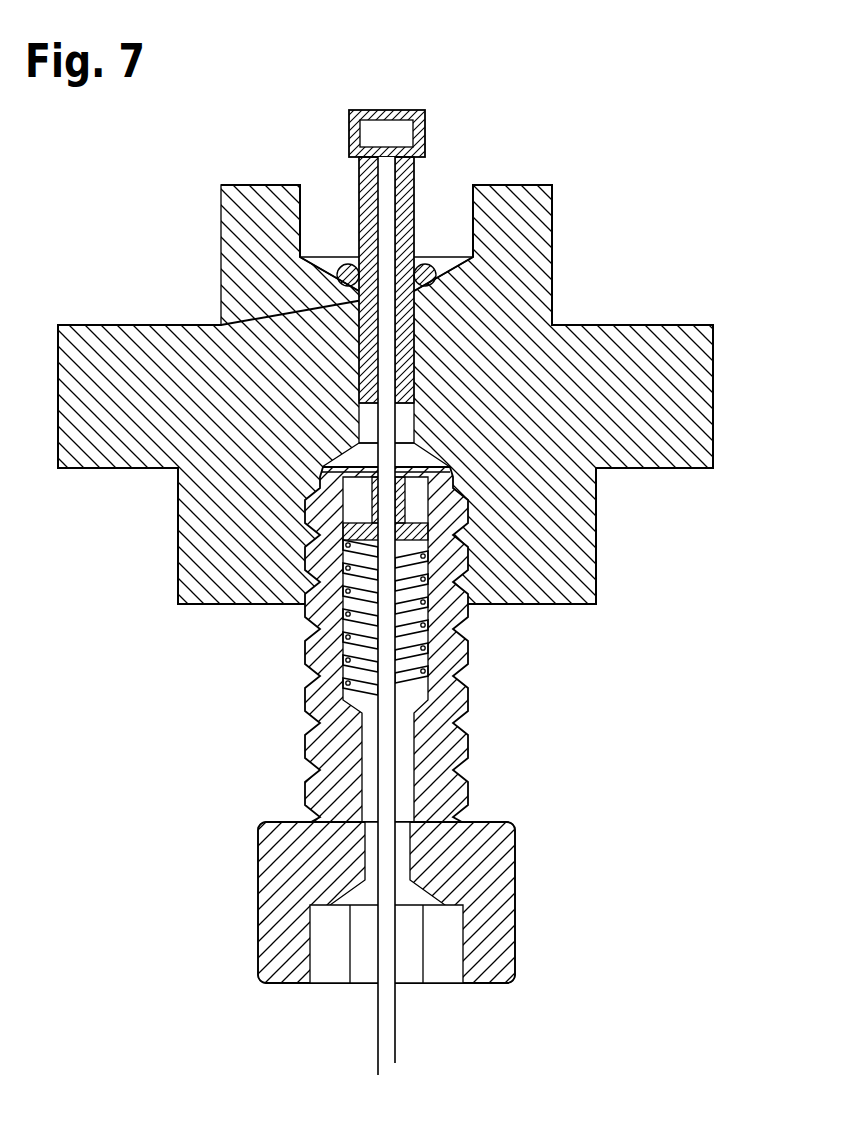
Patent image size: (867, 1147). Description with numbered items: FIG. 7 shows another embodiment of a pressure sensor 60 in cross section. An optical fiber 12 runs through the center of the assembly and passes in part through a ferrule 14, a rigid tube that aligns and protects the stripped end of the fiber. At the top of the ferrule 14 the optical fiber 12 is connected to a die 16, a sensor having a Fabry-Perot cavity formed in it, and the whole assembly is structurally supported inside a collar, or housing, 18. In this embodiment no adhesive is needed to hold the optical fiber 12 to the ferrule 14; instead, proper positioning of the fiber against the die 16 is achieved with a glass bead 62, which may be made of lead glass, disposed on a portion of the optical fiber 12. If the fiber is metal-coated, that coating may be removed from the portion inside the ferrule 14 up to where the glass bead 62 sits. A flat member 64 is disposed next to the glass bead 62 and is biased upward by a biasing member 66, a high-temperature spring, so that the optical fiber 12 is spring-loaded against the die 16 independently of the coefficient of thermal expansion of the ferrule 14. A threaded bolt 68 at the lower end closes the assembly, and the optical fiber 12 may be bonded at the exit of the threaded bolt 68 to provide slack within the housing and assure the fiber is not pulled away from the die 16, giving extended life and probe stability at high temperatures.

The optical fiber 12 is at (392, 1047).
The ferrule 14 is at (358, 177).
The die 16 is at (425, 133).
The collar 18 is at (626, 323).
The pressure sensor 60 is at (610, 149).
The glass bead 62 is at (370, 507).
The flat member 64 is at (430, 533).
The biasing member 66 is at (418, 601).
The threaded bolt 68 is at (258, 888).